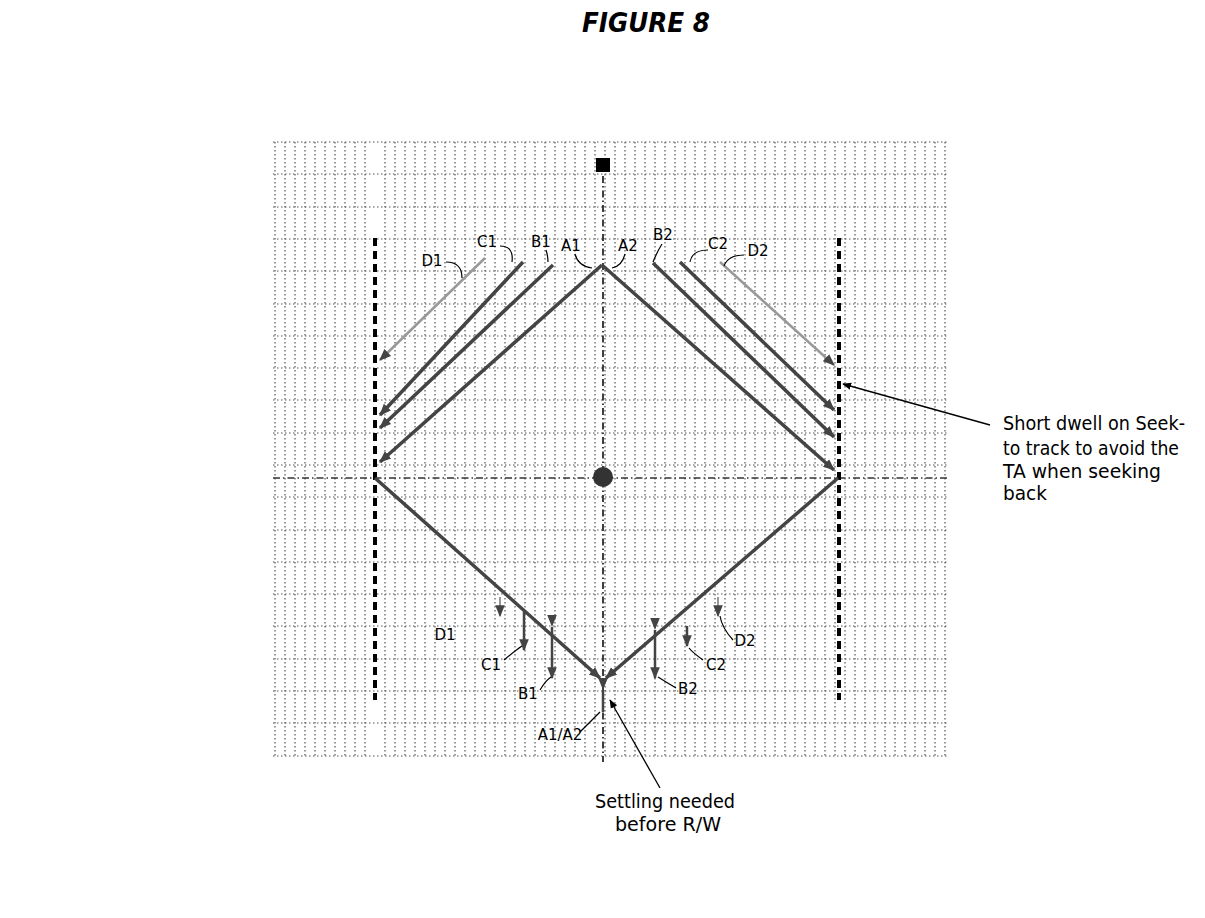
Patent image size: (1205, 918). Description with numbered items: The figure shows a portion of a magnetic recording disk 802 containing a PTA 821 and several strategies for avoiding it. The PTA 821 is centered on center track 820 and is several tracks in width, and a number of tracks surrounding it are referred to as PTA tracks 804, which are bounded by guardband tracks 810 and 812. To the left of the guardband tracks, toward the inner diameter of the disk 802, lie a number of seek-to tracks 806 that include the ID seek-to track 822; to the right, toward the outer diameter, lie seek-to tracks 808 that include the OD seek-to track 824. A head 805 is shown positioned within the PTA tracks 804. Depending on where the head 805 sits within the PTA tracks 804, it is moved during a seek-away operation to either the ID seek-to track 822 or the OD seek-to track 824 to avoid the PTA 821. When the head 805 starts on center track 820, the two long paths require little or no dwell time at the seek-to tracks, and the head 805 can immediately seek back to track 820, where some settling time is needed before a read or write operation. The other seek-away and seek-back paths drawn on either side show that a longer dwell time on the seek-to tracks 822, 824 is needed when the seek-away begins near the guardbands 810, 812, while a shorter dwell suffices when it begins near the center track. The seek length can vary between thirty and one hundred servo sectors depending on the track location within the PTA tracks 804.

The magnetic recording disk 802 is at (226, 130).
The PTA tracks 804 is at (574, 131).
The head 805 is at (611, 160).
The seek-to tracks 806 is at (293, 129).
The seek-to tracks 808 is at (823, 131).
The guardband track 810 is at (473, 140).
The guardband track 812 is at (731, 140).
The center track 820 is at (606, 226).
The PTA 821 is at (618, 465).
The ID seek-to track 822 is at (372, 698).
The OD seek-to track 824 is at (842, 700).